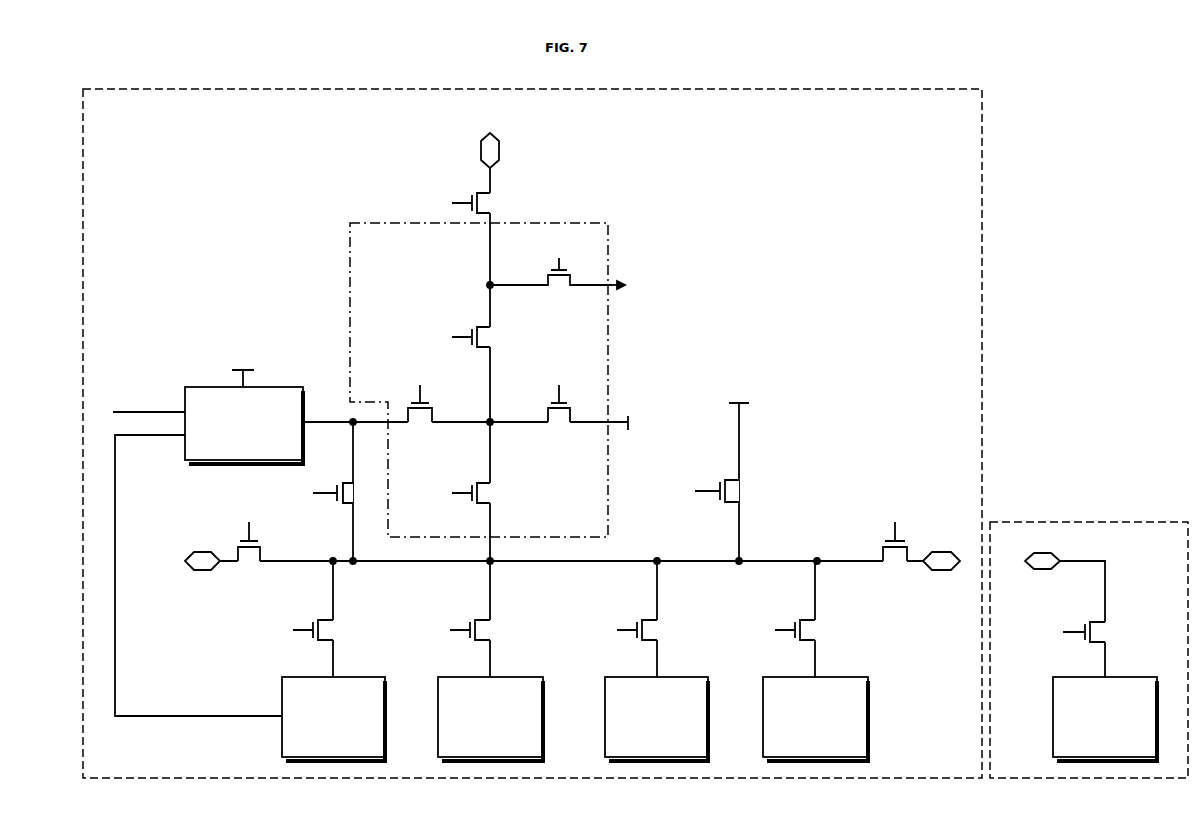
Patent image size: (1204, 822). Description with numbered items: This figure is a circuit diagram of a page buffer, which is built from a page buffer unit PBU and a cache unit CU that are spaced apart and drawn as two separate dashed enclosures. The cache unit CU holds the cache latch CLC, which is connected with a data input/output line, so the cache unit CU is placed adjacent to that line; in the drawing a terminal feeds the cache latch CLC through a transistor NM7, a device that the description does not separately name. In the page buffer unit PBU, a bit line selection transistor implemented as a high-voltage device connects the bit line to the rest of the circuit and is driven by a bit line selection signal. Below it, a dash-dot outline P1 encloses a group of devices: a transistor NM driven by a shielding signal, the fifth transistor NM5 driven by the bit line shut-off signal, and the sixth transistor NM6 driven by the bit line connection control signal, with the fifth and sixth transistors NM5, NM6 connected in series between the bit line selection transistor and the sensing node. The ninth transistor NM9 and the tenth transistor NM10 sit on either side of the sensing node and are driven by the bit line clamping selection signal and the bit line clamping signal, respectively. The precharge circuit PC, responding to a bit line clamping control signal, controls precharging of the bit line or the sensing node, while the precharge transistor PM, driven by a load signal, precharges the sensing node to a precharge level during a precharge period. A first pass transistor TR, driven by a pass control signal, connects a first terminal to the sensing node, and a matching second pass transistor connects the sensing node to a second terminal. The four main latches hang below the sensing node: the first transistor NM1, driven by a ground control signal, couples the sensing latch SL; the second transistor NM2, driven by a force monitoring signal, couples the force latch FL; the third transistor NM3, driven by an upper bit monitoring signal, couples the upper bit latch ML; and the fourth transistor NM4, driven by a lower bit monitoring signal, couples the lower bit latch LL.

The page buffer unit PBU is at (678, 89).
The cache unit CU is at (1128, 522).
The bit line connection / clamp portion P1 is at (598, 222).
The precharge circuit PC is at (265, 387).
The sensing latch SL is at (365, 677).
The force latch FL is at (528, 677).
The upper bit latch ML is at (692, 677).
The lower bit latch LL is at (852, 677).
The cache latch CLC is at (1135, 677).
The transistor driven by shielding signal NM is at (557, 267).
The fifth transistor NM5 is at (460, 337).
The ninth transistor NM9 is at (416, 405).
The tenth transistor NM10 is at (553, 405).
The sixth transistor NM6 is at (462, 493).
The precharge transistor PM is at (309, 491).
The first pass transistor TR is at (242, 544).
The first transistor NM1 is at (301, 619).
The second transistor NM2 is at (459, 630).
The third transistor NM3 is at (619, 619).
The fourth transistor NM4 is at (782, 619).
The NMOS transistor NM7 is at (1071, 632).